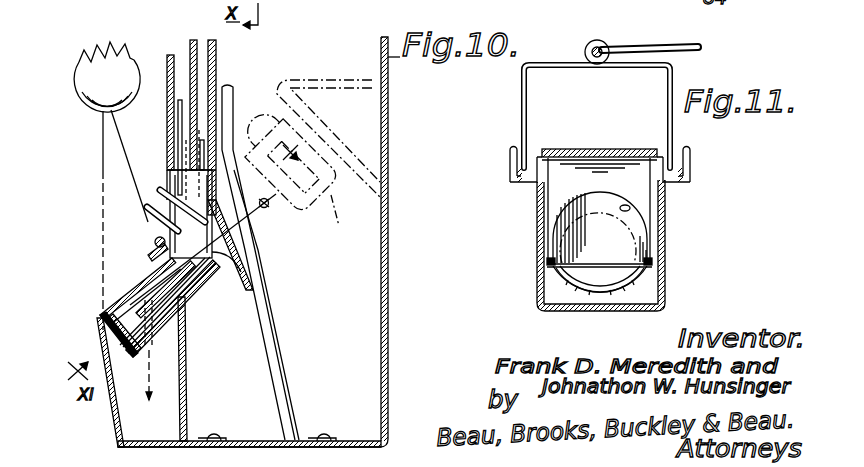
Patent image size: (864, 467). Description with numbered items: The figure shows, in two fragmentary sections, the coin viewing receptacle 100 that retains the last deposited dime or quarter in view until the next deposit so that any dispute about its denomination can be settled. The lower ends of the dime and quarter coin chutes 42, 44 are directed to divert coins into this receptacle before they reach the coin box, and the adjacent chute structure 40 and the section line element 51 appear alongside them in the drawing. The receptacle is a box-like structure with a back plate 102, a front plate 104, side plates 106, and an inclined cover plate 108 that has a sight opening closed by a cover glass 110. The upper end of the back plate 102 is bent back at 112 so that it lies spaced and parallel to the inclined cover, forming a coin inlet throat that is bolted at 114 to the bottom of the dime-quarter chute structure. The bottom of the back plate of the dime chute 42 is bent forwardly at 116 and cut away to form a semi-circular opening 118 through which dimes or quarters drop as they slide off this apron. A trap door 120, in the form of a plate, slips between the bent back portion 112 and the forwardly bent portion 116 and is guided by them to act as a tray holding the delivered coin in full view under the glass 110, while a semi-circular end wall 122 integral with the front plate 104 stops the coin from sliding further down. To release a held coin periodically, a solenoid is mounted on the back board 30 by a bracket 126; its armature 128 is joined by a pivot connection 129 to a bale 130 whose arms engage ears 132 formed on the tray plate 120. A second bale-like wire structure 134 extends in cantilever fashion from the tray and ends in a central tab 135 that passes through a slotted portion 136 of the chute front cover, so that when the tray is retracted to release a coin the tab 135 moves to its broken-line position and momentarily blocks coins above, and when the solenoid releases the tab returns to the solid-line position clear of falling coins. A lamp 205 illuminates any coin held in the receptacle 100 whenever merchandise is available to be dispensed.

In FIG. 10, the back board 30 is at (390, 292).
In FIG. 10, the tube 40 is at (223, 90).
In FIG. 10, the 10 cent coin chute 42 is at (195, 45).
In FIG. 10, the 25 cent coin chute 44 is at (178, 58).
In FIG. 10, the phantom line 51 is at (341, 221).
In FIG. 10, the coin viewing receptacle 100 is at (113, 297).
In FIG. 10, the back plate 102 is at (186, 385).
In FIG. 10, the front plate 104 is at (108, 413).
In FIG. 11, the front plate 104 is at (606, 312).
In FIG. 10, the side plates 106 is at (170, 429).
In FIG. 11, the side plates 106 is at (545, 252).
In FIG. 10, the inclined cover plate 108 is at (153, 262).
In FIG. 10, the cover glass 110 is at (105, 315).
In FIG. 10, the bent back portion 112 is at (190, 274).
In FIG. 10, the bolt connection 114 is at (156, 241).
In FIG. 10, the forwardly bent portion 116 is at (165, 325).
In FIG. 11, the forwardly bent portion 116 is at (555, 200).
In FIG. 11, the semi-circular opening 118 is at (630, 210).
In FIG. 10, the trap door 120 is at (165, 305).
In FIG. 11, the trap door 120 is at (556, 270).
In FIG. 10, the semi-circular end wall 122 is at (108, 345).
In FIG. 11, the semi-circular end wall 122 is at (636, 286).
In FIG. 10, the bracket 126 is at (358, 80).
In FIG. 11, the armature 128 is at (698, 46).
In FIG. 10, the pivot connection 129 is at (267, 209).
In FIG. 11, the pivot connection 129 is at (589, 43).
In FIG. 10, the bale 130 is at (263, 212).
In FIG. 11, the bale 130 is at (521, 108).
In FIG. 11, the ears 132 is at (513, 176).
In FIG. 10, the bale-like wire structure 134 is at (145, 214).
In FIG. 11, the bale-like wire structure 134 is at (689, 152).
In FIG. 10, the central tab 135 is at (157, 200).
In FIG. 10, the slotted portion 136 is at (170, 180).
In FIG. 10, the lamp 205 is at (82, 78).